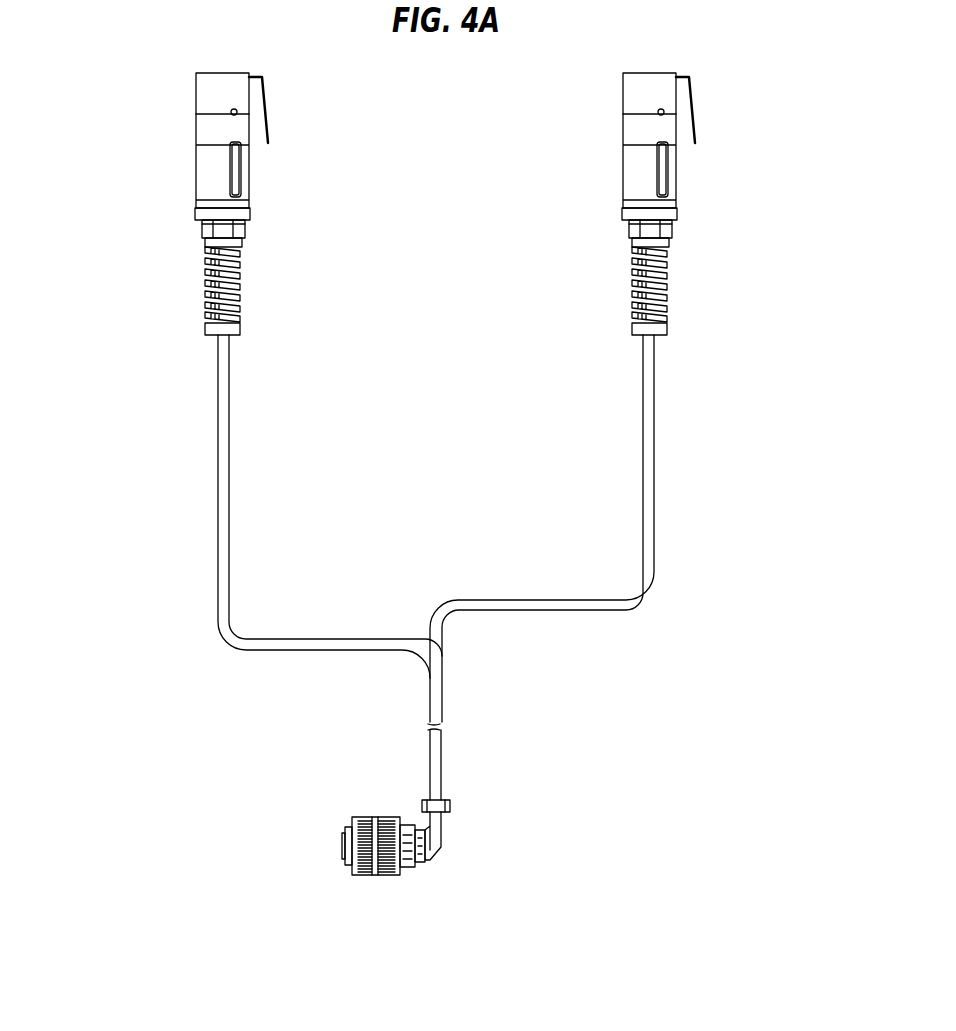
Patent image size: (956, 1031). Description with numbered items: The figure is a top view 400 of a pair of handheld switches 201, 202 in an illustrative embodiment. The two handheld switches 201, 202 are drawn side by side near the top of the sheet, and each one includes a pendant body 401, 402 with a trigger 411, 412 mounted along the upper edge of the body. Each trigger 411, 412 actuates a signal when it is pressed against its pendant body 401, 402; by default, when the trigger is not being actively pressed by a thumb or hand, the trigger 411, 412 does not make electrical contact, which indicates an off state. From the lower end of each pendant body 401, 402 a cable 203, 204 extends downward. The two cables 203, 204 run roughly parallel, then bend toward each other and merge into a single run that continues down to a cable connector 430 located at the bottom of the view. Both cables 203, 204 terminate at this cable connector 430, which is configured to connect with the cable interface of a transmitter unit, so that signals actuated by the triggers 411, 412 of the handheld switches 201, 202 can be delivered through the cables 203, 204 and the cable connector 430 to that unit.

The top view 400 is at (438, 474).
The handheld switch 201 is at (204, 204).
The handheld switch 202 is at (662, 204).
The cable 203 is at (218, 466).
The cable 204 is at (655, 463).
The pendant body 401 is at (207, 93).
The pendant body 402 is at (633, 90).
The trigger 411 is at (264, 100).
The trigger 412 is at (691, 100).
The cable connector 430 is at (375, 816).